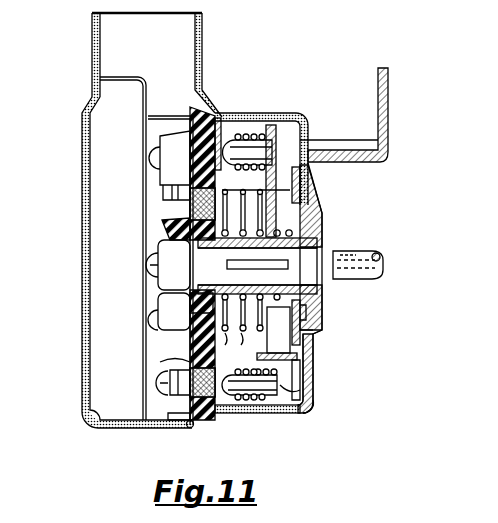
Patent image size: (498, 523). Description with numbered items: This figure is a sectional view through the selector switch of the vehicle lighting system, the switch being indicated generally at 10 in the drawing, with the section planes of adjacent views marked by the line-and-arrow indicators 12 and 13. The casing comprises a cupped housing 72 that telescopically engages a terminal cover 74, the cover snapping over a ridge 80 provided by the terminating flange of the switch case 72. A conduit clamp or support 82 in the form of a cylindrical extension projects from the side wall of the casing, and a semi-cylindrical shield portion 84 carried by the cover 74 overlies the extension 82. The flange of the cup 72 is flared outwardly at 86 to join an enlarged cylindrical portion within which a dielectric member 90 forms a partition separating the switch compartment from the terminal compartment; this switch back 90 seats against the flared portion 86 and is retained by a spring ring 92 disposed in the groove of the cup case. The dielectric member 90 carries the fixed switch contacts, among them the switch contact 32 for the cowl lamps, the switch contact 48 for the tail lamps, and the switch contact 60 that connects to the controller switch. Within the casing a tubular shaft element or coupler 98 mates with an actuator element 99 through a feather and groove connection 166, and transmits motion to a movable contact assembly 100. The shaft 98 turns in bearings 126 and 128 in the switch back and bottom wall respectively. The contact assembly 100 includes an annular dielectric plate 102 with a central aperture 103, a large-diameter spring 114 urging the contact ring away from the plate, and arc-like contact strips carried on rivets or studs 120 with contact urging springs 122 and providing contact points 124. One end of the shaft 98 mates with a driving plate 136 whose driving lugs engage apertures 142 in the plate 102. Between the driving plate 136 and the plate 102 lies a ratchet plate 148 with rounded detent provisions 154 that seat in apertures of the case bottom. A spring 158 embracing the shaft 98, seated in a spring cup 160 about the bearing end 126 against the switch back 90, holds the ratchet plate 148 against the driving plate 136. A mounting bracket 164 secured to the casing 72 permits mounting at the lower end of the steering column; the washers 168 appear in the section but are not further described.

The cowl lamps 10 is at (138, 227).
The section line 12- 12 is at (227, 83).
The section line 13- 13 is at (218, 110).
The switch contact 32 is at (160, 195).
The switch contact 48 is at (200, 331).
The switch contact 60 is at (218, 128).
The cupped housing 72 is at (310, 140).
The terminal cover 74 is at (82, 140).
The ridge 80 is at (188, 429).
The conduit clamp or support 82 is at (200, 46).
The semi-cylindrical shield portion 84 is at (92, 39).
The flared portion 86 is at (218, 418).
The dielectric member 90 is at (195, 353).
The spring ring 92 is at (170, 417).
The shaft element or coupler 98 is at (323, 233).
The actuator element 99 is at (357, 258).
The movable contact assembly 100 is at (263, 193).
The dielectric plate 102 is at (262, 400).
The central aperture 103 is at (305, 313).
The spring 114 is at (258, 338).
The rivets or studs 120 is at (308, 411).
The contact urging springs 122 is at (300, 387).
The contact points 124 is at (232, 376).
The bearing 126 is at (202, 288).
The bearing 128 is at (323, 296).
The driving plate 136 is at (313, 347).
The apertures 142 is at (278, 372).
The ratchet plate 148 is at (310, 333).
The detent provisions 154 is at (318, 343).
The spring 158 is at (323, 204).
The spring cup 160 is at (202, 314).
The mounting bracket 164 is at (387, 150).
The feather and groove connection 166 is at (347, 265).
The washer 168 is at (153, 277).